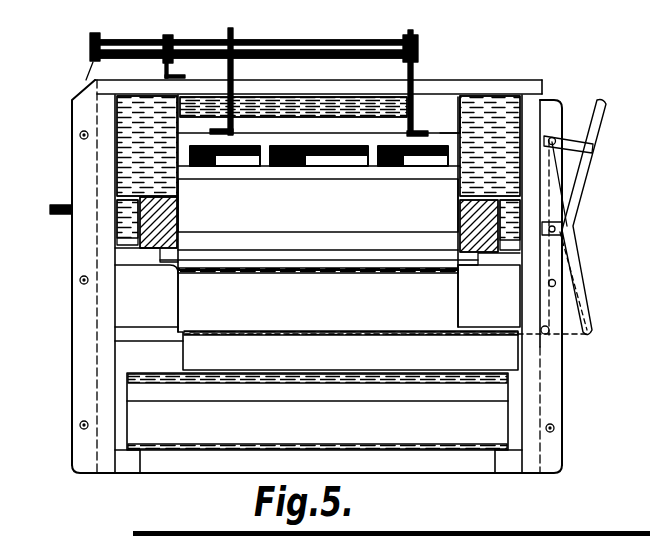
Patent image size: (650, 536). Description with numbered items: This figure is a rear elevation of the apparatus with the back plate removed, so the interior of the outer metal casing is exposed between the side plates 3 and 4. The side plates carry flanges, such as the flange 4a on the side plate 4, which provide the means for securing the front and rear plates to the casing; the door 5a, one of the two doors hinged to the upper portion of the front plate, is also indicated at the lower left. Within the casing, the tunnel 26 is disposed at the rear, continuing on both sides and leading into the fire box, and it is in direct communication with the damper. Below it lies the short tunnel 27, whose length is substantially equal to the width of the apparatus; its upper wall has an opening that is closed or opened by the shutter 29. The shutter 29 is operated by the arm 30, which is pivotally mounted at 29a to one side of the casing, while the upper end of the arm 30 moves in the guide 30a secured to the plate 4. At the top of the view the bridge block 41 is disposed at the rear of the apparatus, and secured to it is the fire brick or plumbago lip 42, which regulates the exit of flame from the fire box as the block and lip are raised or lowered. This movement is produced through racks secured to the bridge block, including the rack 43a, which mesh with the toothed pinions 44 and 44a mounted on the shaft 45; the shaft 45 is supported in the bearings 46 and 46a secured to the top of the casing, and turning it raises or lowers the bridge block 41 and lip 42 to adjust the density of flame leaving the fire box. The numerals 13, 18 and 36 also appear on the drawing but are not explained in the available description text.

The side plate 3 is at (112, 384).
The side plate 4 is at (532, 395).
The flange 4a is at (553, 452).
The door 5a is at (83, 447).
The cross bar 13 is at (428, 77).
The side frame plate 18 is at (72, 140).
The tunnel 26 is at (317, 296).
The short tunnel 27 is at (316, 348).
The shutter 29 is at (501, 335).
The pivot 29a is at (562, 230).
The operating arm 30 is at (577, 165).
The guide 30a is at (591, 147).
The plate 36 is at (319, 252).
The bridge block 41 is at (290, 140).
The fire brick or plumbago lip 42 is at (318, 205).
The rack 43a is at (236, 77).
The toothed pinion 44 is at (412, 37).
The toothed pinion 44a is at (233, 30).
The shaft 45 is at (246, 41).
The bearing 46 is at (415, 70).
The bearing 46a is at (168, 35).